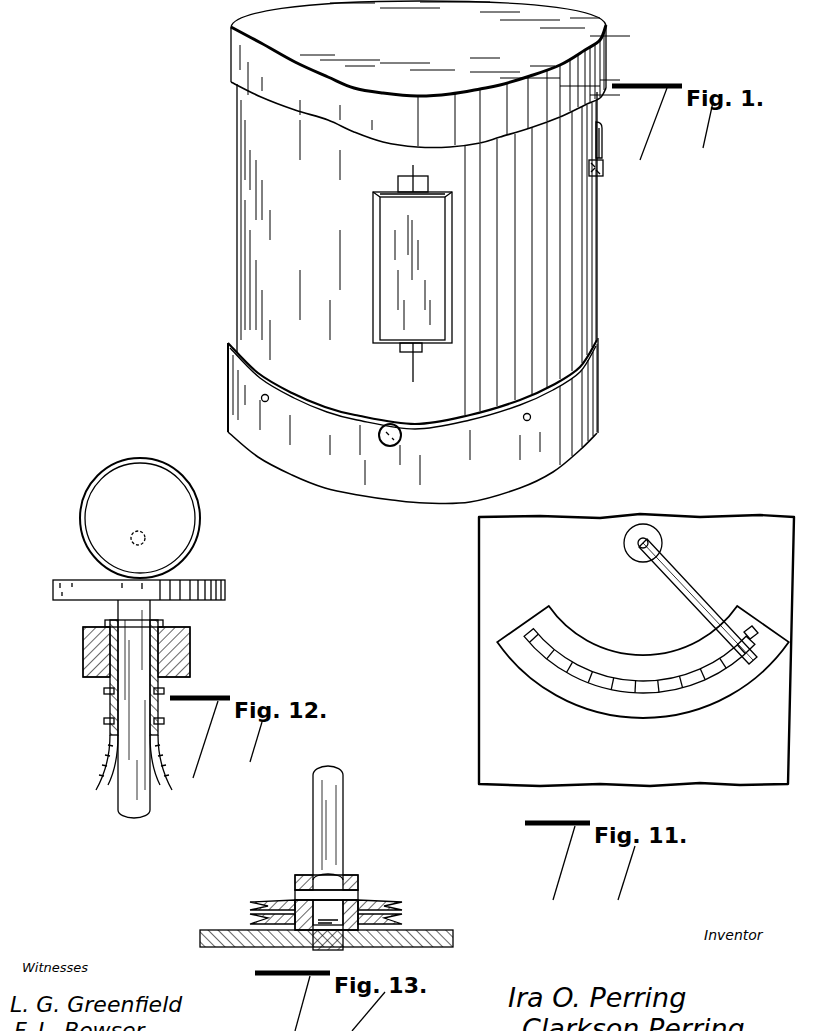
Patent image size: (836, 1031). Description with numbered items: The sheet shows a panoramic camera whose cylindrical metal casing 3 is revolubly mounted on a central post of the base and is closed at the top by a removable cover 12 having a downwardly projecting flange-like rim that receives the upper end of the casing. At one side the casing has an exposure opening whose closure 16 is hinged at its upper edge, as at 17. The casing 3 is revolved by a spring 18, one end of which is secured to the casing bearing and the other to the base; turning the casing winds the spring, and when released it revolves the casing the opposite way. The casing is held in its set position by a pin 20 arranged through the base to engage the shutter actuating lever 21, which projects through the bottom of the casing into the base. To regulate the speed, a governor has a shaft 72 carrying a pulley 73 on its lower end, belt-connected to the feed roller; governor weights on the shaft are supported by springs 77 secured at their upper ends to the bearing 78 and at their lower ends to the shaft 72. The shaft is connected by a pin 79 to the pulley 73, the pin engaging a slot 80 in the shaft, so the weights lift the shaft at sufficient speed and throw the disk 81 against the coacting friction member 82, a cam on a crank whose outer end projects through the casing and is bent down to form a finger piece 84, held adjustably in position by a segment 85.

In FIG. 1, the casing 3 is at (250, 182).
In FIG. 11, the casing 3 is at (714, 530).
In FIG. 1, the cover 12 is at (231, 42).
In FIG. 1, the closure 16 is at (390, 255).
In FIG. 1, the hinge 17 is at (430, 190).
In FIG. 1, the spring 18 is at (405, 173).
In FIG. 1, the pin 20 is at (388, 446).
In FIG. 1, the shutter actuating lever 21 is at (263, 402).
In FIG. 1, the finger piece 84 is at (601, 152).
In FIG. 11, the finger piece 84 is at (693, 598).
In FIG. 1, the segment 85 is at (602, 166).
In FIG. 11, the segment 85 is at (700, 676).
In FIG. 12, the friction member 82 is at (108, 468).
In FIG. 12, the disk 81 is at (207, 582).
In FIG. 12, the shaft 72 is at (136, 630).
In FIG. 13, the shaft 72 is at (343, 800).
In FIG. 12, the bearing 78 is at (172, 657).
In FIG. 12, the springs 77 is at (104, 751).
In FIG. 13, the pin 79 is at (346, 878).
In FIG. 13, the slot 80 is at (332, 915).
In FIG. 13, the pulley 73 is at (380, 905).